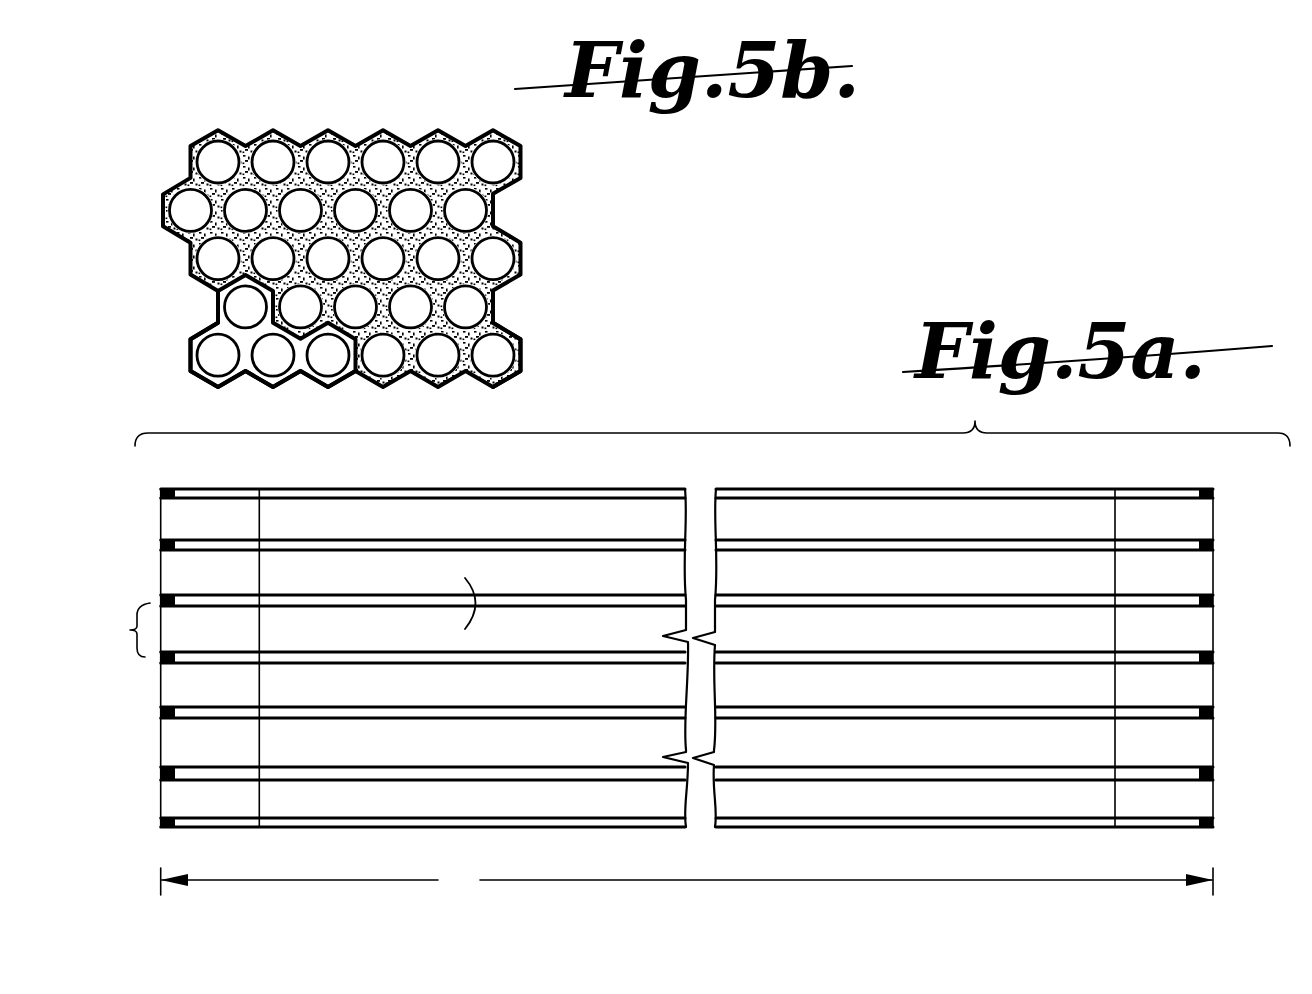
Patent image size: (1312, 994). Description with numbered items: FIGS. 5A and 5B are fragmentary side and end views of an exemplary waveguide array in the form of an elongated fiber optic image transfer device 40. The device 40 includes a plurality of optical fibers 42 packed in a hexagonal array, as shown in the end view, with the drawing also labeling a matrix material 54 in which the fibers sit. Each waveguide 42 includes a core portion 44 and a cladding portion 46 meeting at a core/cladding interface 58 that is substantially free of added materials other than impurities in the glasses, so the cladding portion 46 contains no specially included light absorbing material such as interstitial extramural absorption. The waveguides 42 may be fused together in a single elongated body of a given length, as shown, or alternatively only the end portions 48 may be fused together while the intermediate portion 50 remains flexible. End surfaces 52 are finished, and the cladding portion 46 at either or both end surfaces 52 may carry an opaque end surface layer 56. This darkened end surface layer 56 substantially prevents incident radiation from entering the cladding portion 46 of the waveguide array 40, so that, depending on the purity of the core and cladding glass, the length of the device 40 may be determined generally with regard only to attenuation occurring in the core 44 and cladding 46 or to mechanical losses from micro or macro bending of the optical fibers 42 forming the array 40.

In FIG. 5B, the fiber optic image transfer device 40 is at (357, 238).
In FIG. 5A, the fiber optic image transfer device 40 is at (958, 481).
In FIG. 5B, the optical fibers 42 is at (168, 188).
In FIG. 5A, the optical fibers 42 is at (130, 630).
In FIG. 5B, the core portion 44 is at (185, 209).
In FIG. 5A, the core portion 44 is at (383, 677).
In FIG. 5B, the cladding portion 46 is at (222, 324).
In FIG. 5A, the cladding portion 46 is at (490, 655).
In FIG. 5A, the end portions 48 is at (259, 489).
In FIG. 5A, the intermediate portion 50 is at (628, 490).
In FIG. 5A, the end surfaces 52 is at (162, 688).
In FIG. 5B, the matrix material 54 is at (352, 146).
In FIG. 5A, the matrix material 54 is at (661, 491).
In FIG. 5B, the opaque end surface layer 56 is at (492, 326).
In FIG. 5A, the opaque end surface layer 56 is at (160, 493).
In FIG. 5A, the core/cladding interface 58 is at (530, 645).